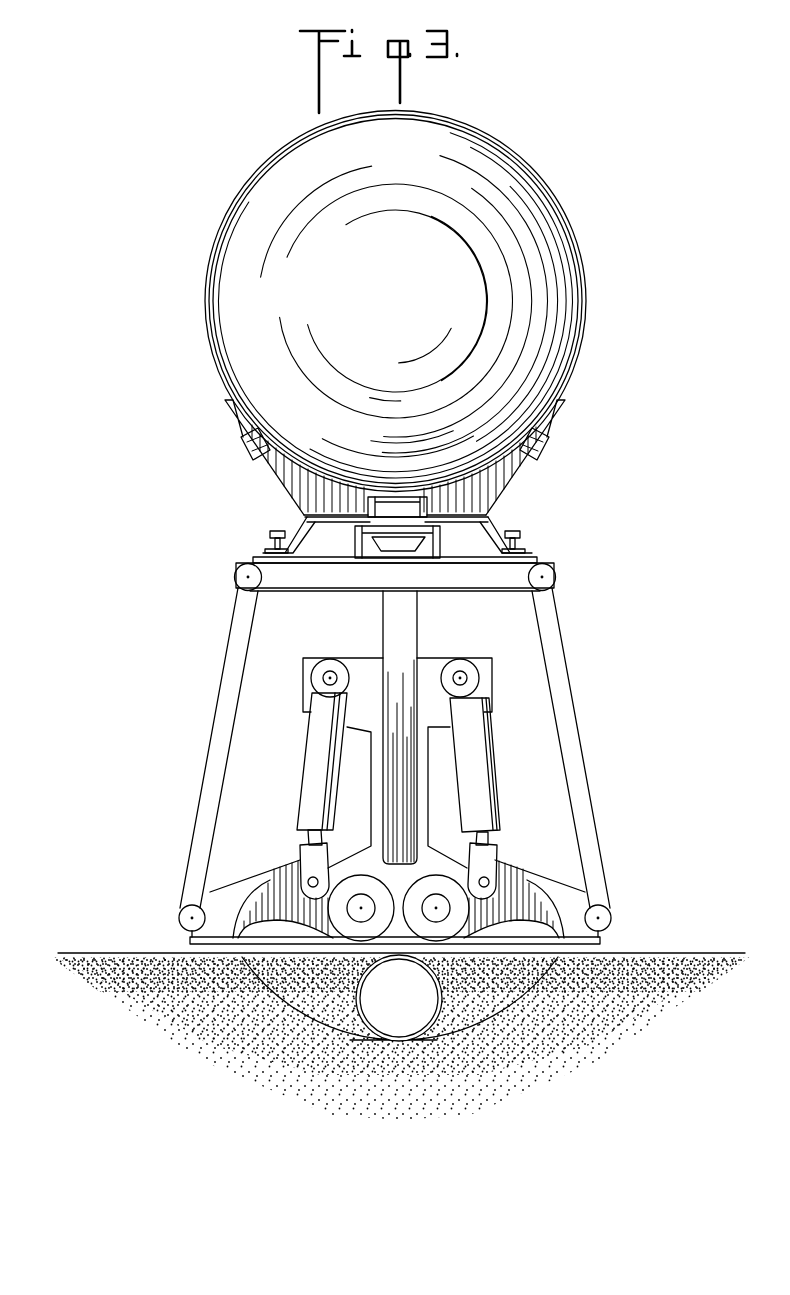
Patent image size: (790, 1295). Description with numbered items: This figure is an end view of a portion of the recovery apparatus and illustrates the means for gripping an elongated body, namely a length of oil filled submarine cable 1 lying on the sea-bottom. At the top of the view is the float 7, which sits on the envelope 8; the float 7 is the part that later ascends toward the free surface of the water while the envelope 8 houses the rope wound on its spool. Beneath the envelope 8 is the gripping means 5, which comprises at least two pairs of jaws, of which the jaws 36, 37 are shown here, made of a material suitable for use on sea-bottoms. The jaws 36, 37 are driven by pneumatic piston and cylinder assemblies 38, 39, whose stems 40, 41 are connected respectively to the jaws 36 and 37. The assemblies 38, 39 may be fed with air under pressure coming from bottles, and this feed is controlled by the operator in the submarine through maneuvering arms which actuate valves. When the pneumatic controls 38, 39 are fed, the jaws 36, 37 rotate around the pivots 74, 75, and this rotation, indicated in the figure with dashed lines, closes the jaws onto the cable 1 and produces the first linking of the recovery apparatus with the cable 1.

The oil filled submarine cable 1 is at (398, 1040).
The gripping means 5 is at (434, 797).
The float 7 is at (553, 283).
The envelope 8 is at (556, 623).
The jaw 36 is at (540, 910).
The jaw 37 is at (253, 910).
The pneumatic piston and cylinder assembly 38 is at (480, 760).
The pneumatic piston and cylinder assembly 39 is at (312, 768).
The stem 40 is at (497, 857).
The stem 41 is at (308, 853).
The pivot 74 is at (438, 906).
The pivot 75 is at (362, 906).